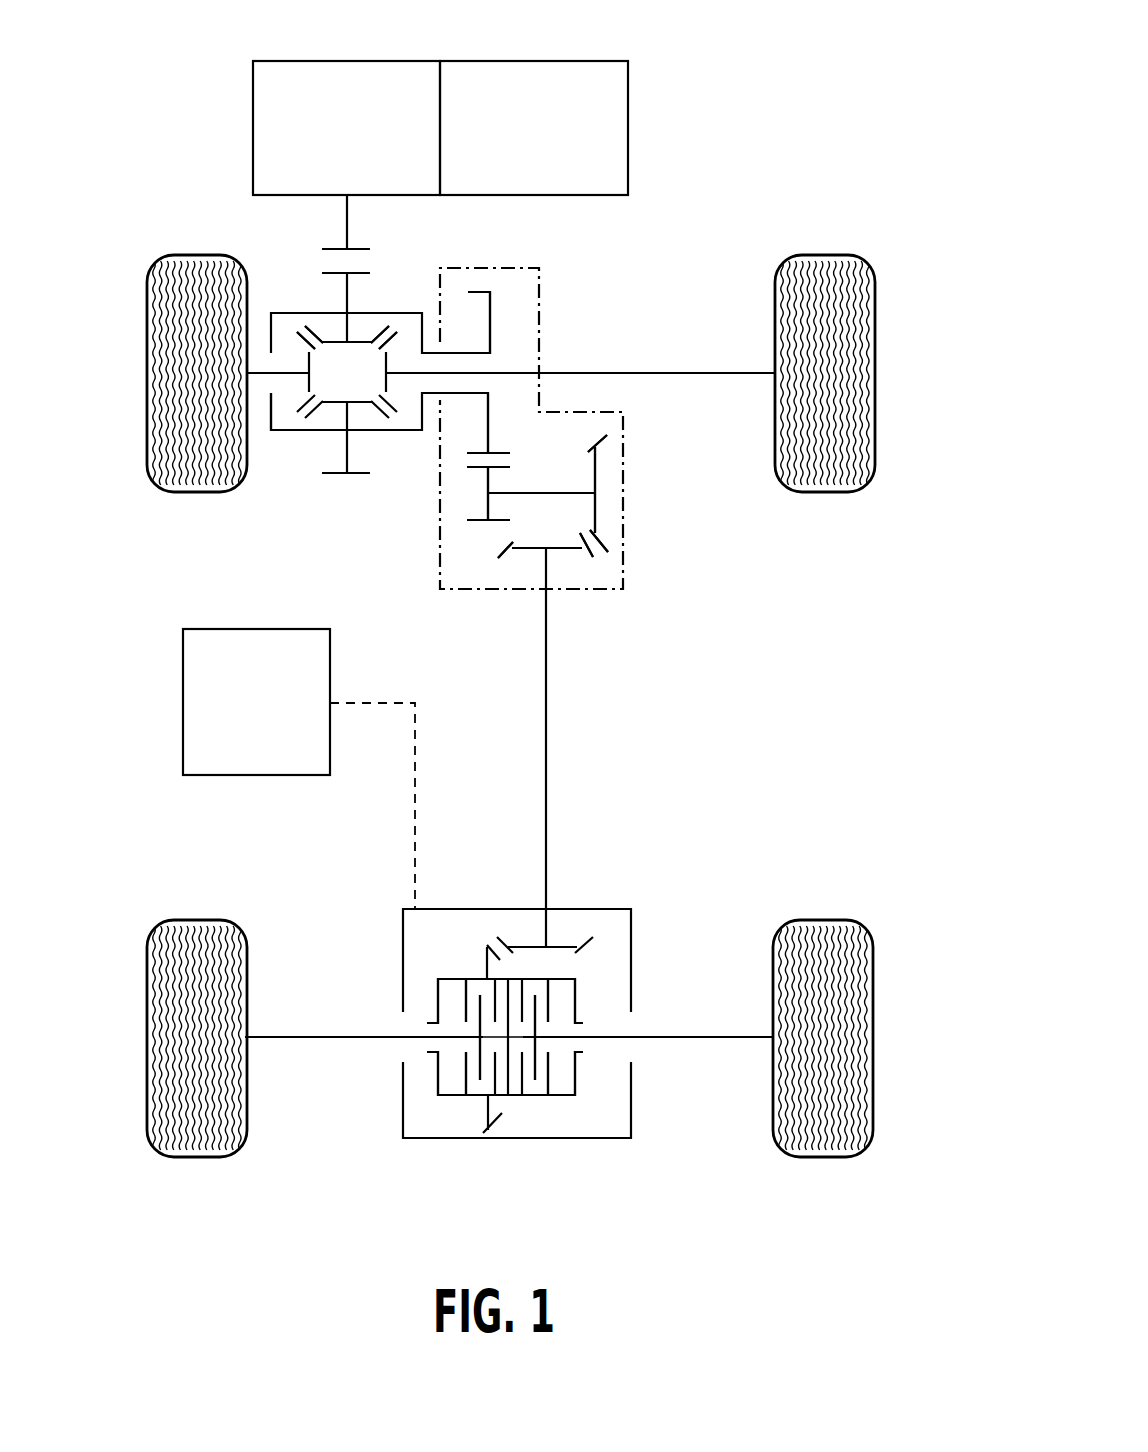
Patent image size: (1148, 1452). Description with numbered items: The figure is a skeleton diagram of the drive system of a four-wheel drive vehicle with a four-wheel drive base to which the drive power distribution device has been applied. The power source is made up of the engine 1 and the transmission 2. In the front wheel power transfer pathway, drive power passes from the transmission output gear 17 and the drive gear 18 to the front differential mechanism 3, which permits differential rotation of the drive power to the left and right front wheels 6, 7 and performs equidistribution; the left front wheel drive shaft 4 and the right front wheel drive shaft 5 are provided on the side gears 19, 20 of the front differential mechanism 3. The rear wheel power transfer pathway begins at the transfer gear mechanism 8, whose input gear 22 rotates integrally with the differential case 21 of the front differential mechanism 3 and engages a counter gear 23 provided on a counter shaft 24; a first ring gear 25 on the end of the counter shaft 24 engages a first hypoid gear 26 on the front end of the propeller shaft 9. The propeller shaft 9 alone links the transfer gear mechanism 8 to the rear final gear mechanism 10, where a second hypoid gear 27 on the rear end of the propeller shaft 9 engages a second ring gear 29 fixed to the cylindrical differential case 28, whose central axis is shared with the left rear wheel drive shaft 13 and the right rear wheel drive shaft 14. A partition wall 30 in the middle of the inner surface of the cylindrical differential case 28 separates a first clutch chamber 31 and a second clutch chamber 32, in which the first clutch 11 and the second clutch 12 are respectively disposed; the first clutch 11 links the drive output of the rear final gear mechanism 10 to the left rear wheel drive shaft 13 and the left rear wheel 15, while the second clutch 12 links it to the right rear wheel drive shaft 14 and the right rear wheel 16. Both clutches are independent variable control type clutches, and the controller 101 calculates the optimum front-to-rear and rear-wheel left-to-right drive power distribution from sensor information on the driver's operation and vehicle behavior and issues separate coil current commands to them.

The engine 1 is at (580, 60).
The transmission 2 is at (300, 61).
The front differential mechanism 3 is at (317, 294).
The left front wheel drive shaft 4 is at (260, 377).
The right front wheel drive shaft 5 is at (667, 373).
The left front wheel 6 is at (175, 256).
The right front wheel 7 is at (822, 255).
The transfer gear mechanism 8 is at (623, 470).
The propeller shaft 9 is at (546, 727).
The rear final gear mechanism 10 is at (565, 928).
The first clutch 11 is at (452, 1077).
The second clutch 12 is at (560, 1077).
The left rear wheel drive shaft 13 is at (293, 1037).
The right rear wheel drive shaft 14 is at (698, 1037).
The left rear wheel 15 is at (175, 920).
The right rear wheel 16 is at (822, 920).
The transmission output gear 17 is at (372, 248).
The drive gear 18 is at (337, 477).
The side gear 19 is at (298, 348).
The side gear 20 is at (388, 348).
The differential case 21 is at (377, 433).
The input gear 22 is at (500, 292).
The counter gear 23 is at (470, 520).
The counter shaft 24 is at (551, 493).
The first ring gear 25 is at (596, 515).
The first hypoid gear 26 is at (517, 558).
The second hypoid gear 27 is at (530, 946).
The cylindrical differential case 28 is at (450, 978).
The second ring gear 29 is at (452, 978).
The partition wall 30 is at (507, 1087).
The first clutch chamber 31 is at (450, 997).
The second clutch chamber 32 is at (562, 1000).
The controller 101 is at (217, 629).